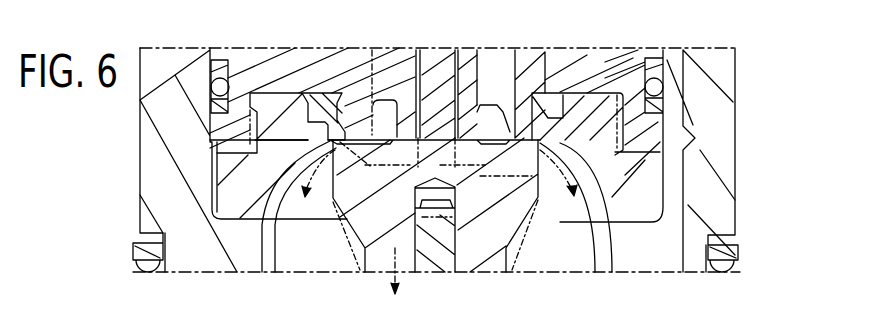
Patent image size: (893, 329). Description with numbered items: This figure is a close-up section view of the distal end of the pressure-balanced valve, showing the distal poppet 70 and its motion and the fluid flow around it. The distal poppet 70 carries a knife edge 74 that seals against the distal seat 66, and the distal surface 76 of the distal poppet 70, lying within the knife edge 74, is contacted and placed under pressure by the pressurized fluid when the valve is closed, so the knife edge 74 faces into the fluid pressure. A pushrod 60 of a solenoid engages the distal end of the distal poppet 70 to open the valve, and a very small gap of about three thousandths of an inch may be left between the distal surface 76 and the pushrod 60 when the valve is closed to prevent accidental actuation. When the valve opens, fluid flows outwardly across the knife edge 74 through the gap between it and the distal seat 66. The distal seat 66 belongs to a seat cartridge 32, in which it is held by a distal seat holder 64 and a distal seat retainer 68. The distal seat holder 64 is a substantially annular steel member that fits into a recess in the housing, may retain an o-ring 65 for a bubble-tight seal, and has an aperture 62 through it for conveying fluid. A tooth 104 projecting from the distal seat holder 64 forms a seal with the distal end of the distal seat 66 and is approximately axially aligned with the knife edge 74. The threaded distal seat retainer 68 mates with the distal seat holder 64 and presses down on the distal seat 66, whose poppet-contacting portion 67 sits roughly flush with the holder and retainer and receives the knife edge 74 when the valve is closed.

The seat cartridge 32 is at (702, 160).
The pushrod 60 is at (433, 57).
The aperture 62 is at (497, 57).
The distal seat holder 64 is at (303, 57).
The o-ring 65 is at (213, 82).
The distal seat 66 is at (563, 100).
The poppet-contacting portion 67 is at (275, 262).
The distal seat retainer 68 is at (212, 172).
The distal poppet 70 is at (490, 265).
The knife edge 74 is at (597, 265).
The distal surface 76 is at (432, 136).
The tooth 104 is at (334, 93).